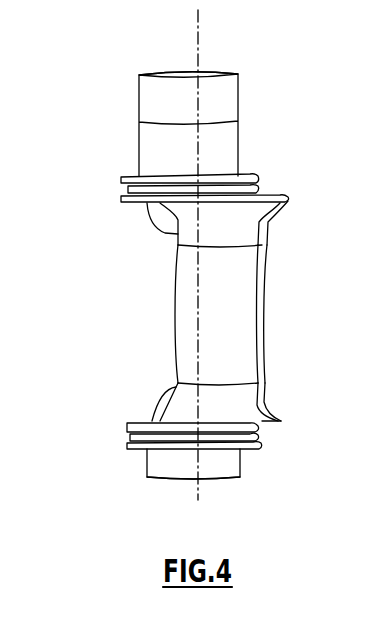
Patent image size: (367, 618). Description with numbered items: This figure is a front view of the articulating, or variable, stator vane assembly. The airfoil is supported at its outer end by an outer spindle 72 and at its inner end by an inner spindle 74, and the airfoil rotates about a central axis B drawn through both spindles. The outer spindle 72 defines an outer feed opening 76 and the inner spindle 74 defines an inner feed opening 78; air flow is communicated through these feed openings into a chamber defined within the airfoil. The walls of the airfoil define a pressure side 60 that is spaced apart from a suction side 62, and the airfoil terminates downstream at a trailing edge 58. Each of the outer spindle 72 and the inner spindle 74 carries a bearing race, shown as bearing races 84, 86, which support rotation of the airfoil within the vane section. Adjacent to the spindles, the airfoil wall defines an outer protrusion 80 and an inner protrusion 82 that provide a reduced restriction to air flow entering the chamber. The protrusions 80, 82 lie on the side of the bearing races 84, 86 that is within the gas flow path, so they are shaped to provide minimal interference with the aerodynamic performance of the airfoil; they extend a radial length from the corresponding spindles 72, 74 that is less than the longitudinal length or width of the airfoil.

The trailing edge 58 is at (366, 582).
The pressure side 60 is at (174, 329).
The suction side 62 is at (268, 311).
The outer spindle 72 is at (231, 146).
The inner spindle 74 is at (220, 466).
The outer feed opening 76 is at (161, 70).
The inner feed opening 78 is at (183, 481).
The outer protrusion 80 is at (151, 227).
The inner protrusion 82 is at (155, 405).
The bearing race 84 is at (119, 182).
The bearing race 86 is at (121, 432).
The axis B is at (200, 30).